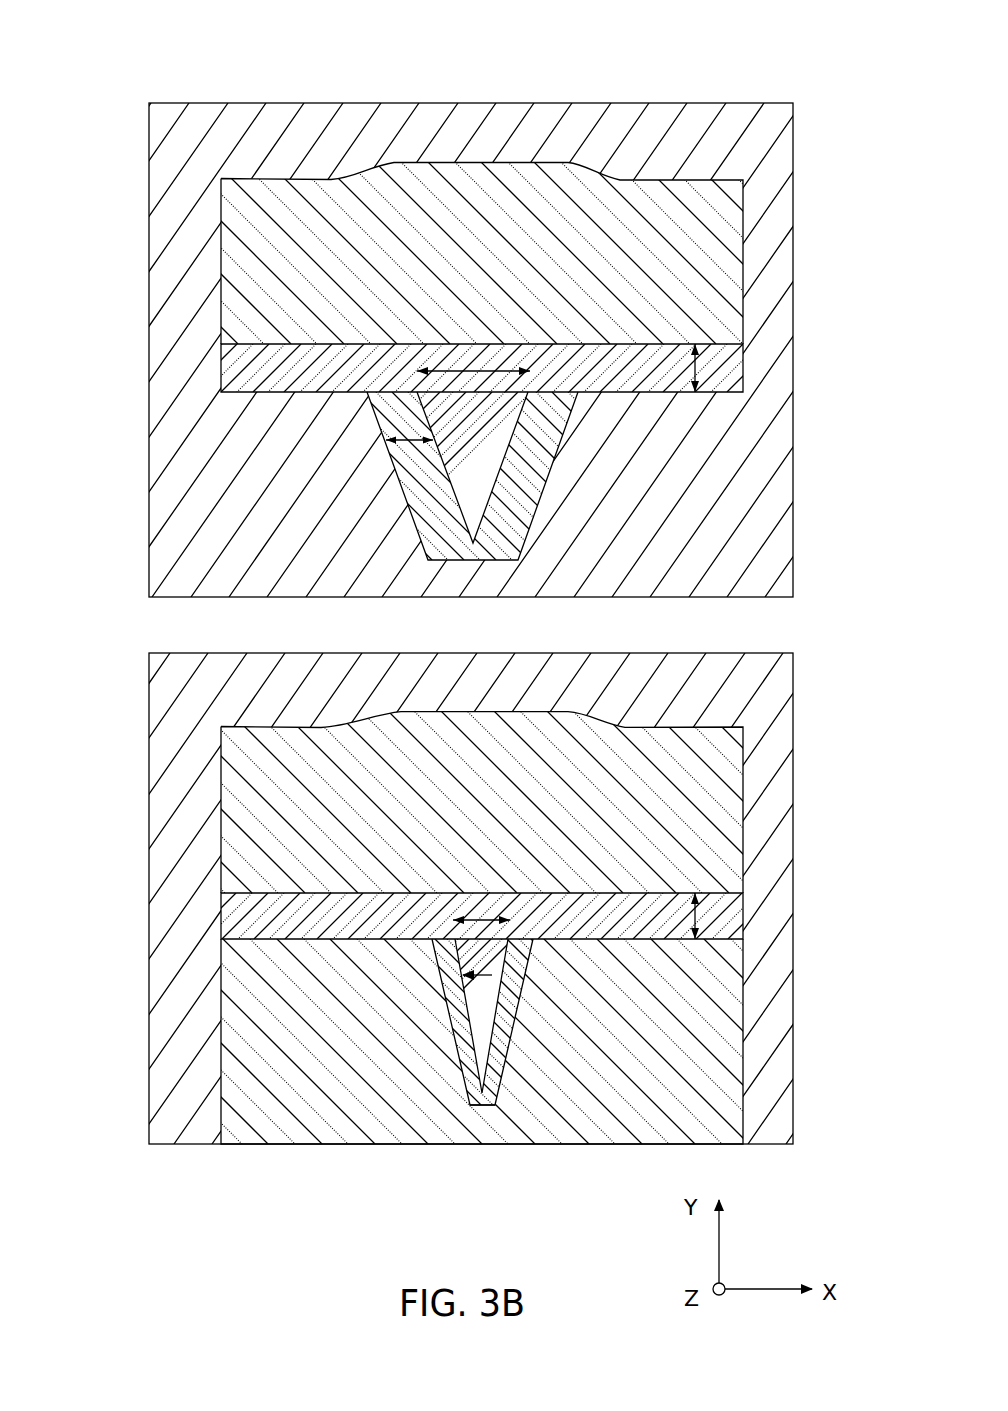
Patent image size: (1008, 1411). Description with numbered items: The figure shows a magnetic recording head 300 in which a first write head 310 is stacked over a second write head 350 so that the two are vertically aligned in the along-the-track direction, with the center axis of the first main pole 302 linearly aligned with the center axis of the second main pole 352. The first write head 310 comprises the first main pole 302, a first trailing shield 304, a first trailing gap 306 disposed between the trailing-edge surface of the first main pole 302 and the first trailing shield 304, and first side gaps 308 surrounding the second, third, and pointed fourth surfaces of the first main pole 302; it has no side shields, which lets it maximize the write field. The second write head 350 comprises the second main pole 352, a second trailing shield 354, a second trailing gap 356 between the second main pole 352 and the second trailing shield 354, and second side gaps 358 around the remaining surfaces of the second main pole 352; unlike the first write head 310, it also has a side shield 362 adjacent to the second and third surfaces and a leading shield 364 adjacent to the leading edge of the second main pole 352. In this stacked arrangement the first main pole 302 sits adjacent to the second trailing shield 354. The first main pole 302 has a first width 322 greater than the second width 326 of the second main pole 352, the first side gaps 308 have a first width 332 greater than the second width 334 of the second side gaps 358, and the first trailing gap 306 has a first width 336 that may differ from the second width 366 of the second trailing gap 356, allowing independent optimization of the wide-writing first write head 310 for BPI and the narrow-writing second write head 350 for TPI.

The magnetic recording head 300 is at (131, 42).
The first write head 310 is at (131, 274).
The first main pole 302 is at (438, 433).
The first trailing shield 304 is at (485, 271).
The first trailing gap 306 is at (337, 377).
The first side gaps 308 is at (413, 475).
The first width 322 is at (487, 367).
The first width 332 is at (382, 419).
The first width 336 is at (697, 364).
The second write head 350 is at (131, 822).
The second main pole 352 is at (500, 968).
The second trailing shield 354 is at (635, 822).
The second trailing gap 356 is at (337, 926).
The second side gaps 358 is at (465, 1050).
The side shield 362 is at (286, 1038).
The leading shield 364 is at (543, 1139).
The second width 326 is at (482, 912).
The second width 334 is at (436, 975).
The second width 366 is at (698, 913).